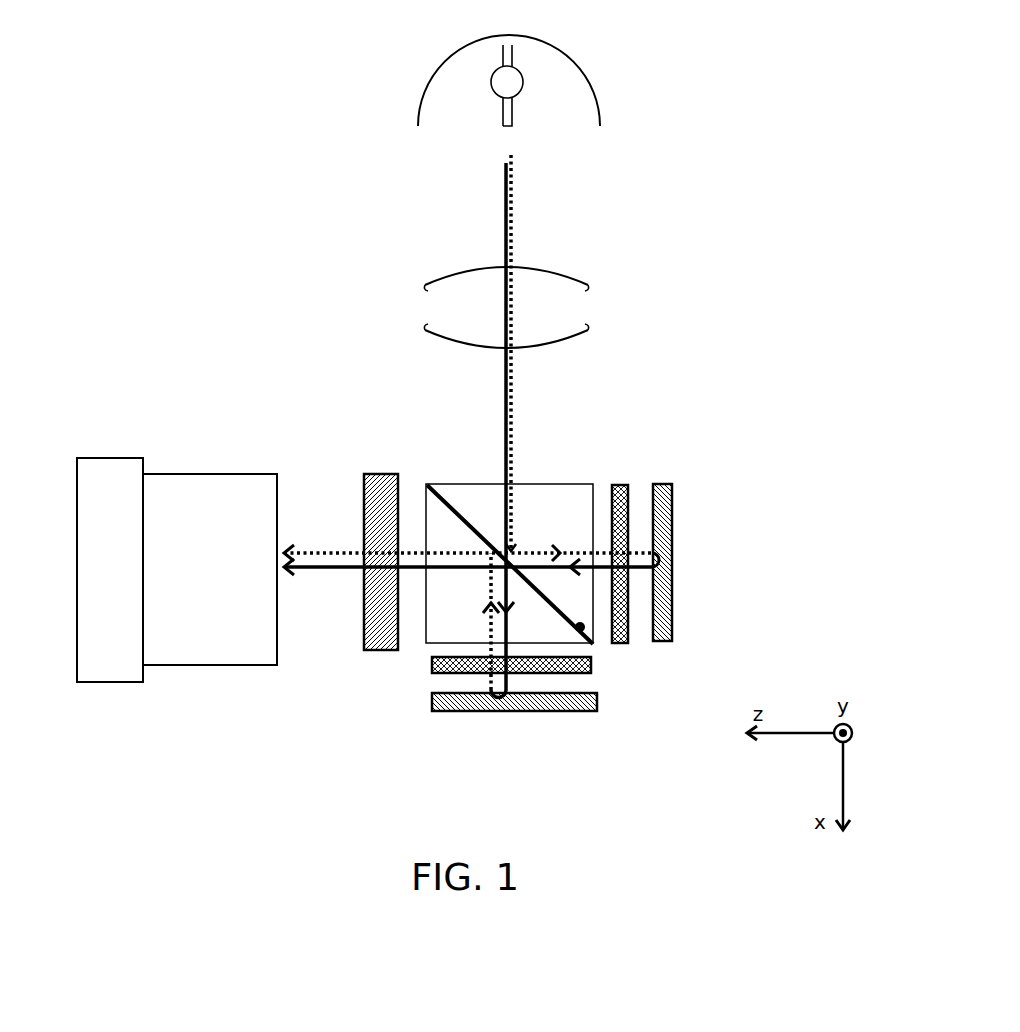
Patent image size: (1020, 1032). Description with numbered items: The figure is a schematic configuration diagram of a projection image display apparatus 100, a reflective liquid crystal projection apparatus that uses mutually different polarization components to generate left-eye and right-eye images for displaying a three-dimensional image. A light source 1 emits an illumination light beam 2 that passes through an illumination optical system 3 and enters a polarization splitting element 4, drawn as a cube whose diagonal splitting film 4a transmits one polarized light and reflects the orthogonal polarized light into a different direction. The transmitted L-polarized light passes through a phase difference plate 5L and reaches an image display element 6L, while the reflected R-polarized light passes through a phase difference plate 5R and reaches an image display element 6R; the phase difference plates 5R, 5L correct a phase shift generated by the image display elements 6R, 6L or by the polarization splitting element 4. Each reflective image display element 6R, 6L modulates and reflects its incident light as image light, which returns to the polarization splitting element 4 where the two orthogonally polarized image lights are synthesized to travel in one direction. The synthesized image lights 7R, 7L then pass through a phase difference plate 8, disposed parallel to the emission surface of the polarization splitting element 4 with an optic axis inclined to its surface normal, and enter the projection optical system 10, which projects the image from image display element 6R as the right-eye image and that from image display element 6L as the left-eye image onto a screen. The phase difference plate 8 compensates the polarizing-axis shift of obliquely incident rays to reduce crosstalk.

The projection image display apparatus 100 is at (652, 73).
The light source 1 is at (506, 76).
The illumination light beam 2 is at (506, 224).
The illumination optical system 3 is at (555, 305).
The polarization splitting element 4 is at (577, 492).
The polarization splitting film 4a is at (583, 630).
The phase difference plate 5R is at (618, 521).
The image display element 6R is at (672, 576).
The phase difference plate 5L is at (590, 665).
The image display element 6L is at (542, 704).
The synthesized image light 7R is at (452, 568).
The synthesized image light 7L is at (477, 553).
The phase difference plate 8 is at (374, 618).
The projection optical system 10 is at (245, 483).